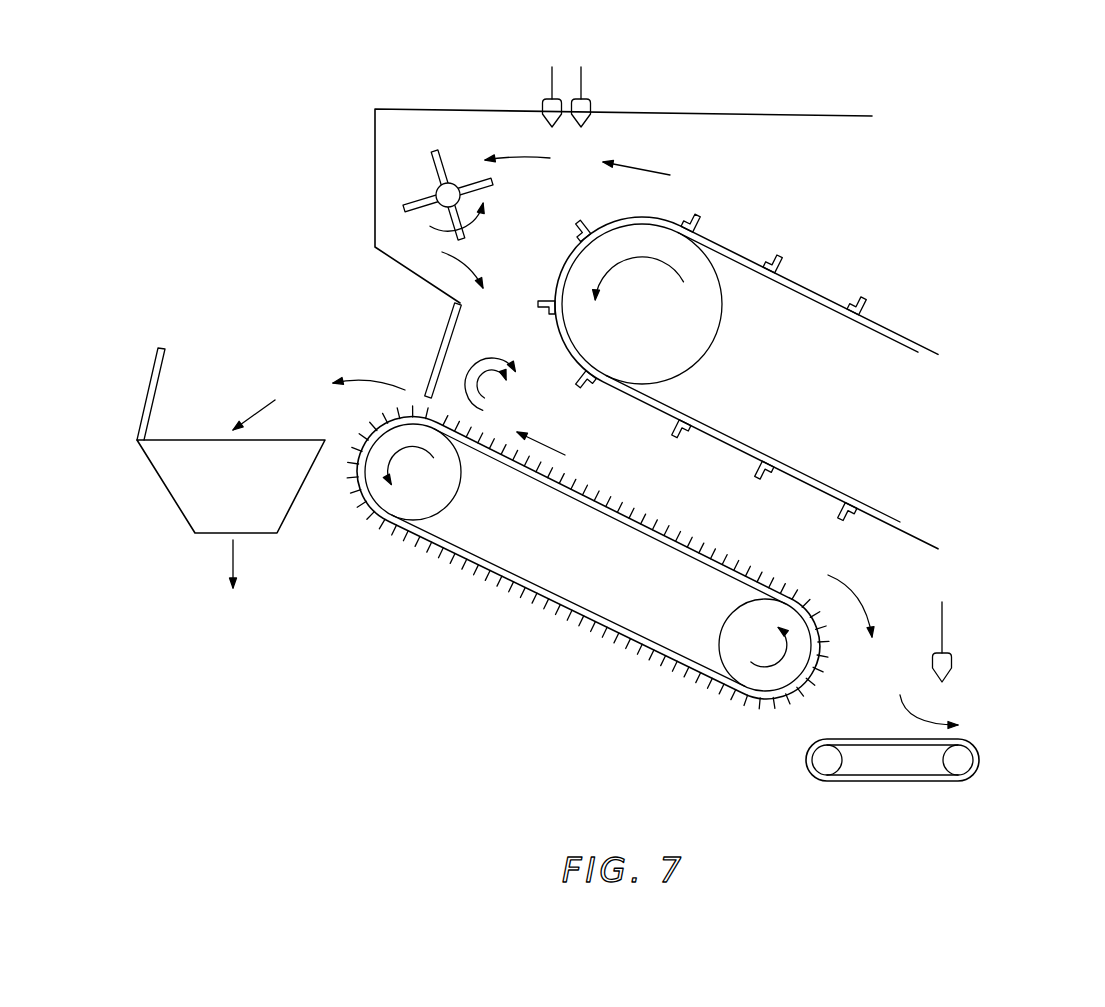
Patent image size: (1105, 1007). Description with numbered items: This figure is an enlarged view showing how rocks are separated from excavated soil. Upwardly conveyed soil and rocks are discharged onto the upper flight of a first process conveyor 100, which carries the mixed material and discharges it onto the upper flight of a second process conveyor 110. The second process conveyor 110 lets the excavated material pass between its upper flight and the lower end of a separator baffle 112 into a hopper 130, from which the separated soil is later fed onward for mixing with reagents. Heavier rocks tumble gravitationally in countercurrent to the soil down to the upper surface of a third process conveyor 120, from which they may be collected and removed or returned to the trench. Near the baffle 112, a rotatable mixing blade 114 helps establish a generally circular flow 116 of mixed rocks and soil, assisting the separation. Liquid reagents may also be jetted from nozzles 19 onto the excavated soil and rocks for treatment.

The nozzles 19 is at (584, 88).
The first process conveyor 100 is at (862, 405).
The second process conveyor 110 is at (597, 575).
The separator baffle 112 is at (430, 382).
The rotatable mixing blade 114 is at (413, 200).
The circular flow 116 is at (463, 370).
The third process conveyor 120 is at (977, 752).
The hopper 130 is at (256, 493).